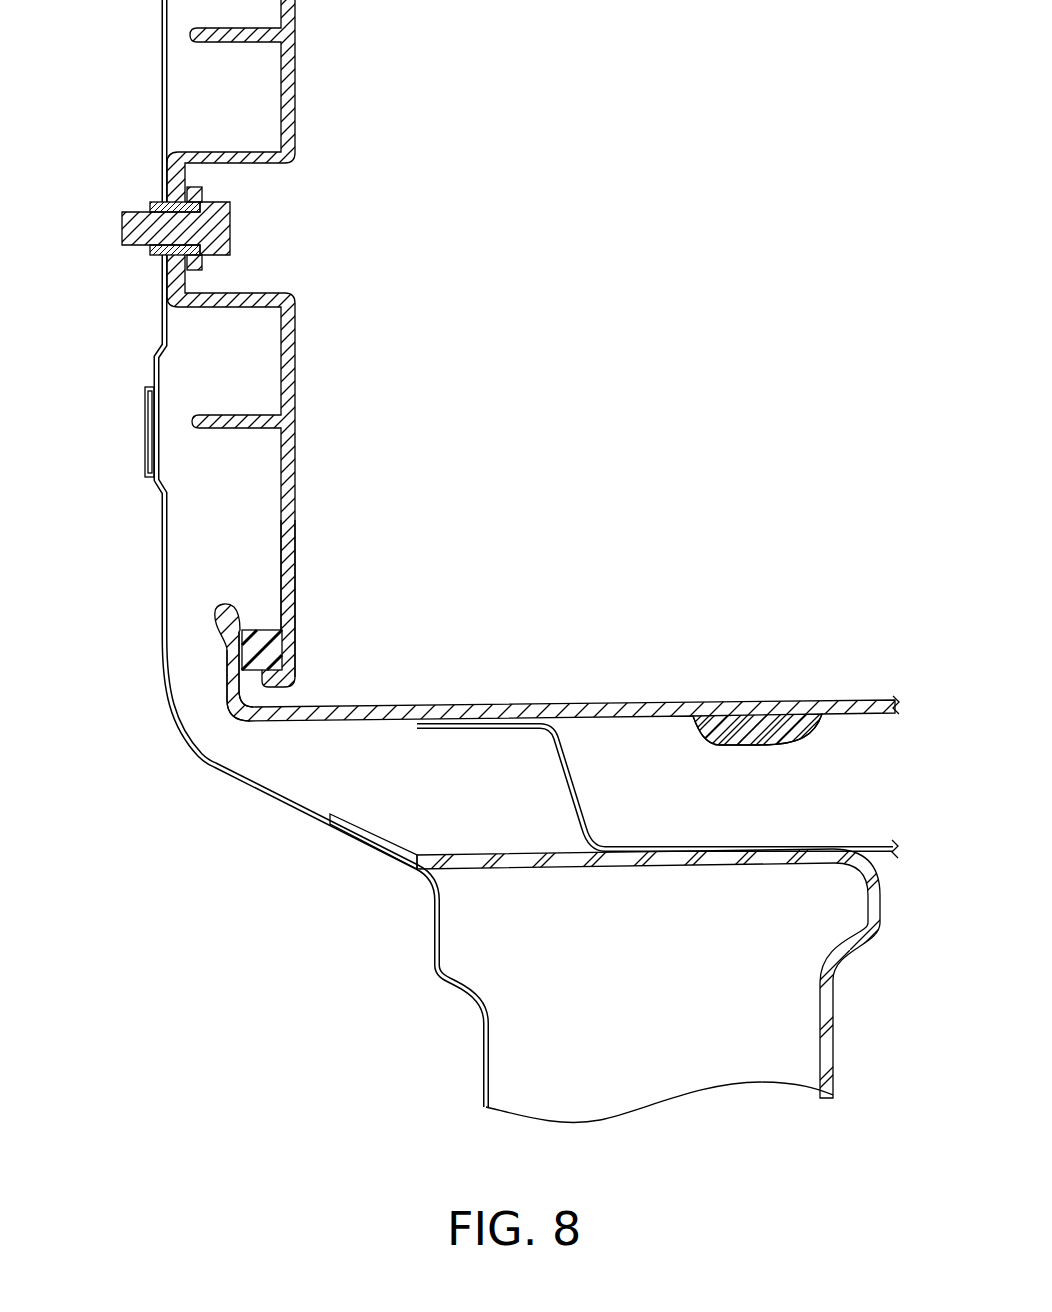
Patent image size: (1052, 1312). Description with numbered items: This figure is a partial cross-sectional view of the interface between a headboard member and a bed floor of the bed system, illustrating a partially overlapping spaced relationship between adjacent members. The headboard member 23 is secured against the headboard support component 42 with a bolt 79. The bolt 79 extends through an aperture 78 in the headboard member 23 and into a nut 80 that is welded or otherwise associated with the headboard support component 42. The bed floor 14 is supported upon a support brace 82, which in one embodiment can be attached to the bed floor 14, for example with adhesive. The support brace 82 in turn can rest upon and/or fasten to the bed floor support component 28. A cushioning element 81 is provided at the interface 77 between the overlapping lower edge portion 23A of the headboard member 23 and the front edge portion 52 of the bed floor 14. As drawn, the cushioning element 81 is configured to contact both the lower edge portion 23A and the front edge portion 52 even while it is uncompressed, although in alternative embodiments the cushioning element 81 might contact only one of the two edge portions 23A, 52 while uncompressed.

The bed floor 14 is at (640, 687).
The headboard member 23 is at (327, 312).
The lower edge portion 23A is at (317, 598).
The bed floor support component 28 is at (403, 900).
The headboard support component 42 is at (147, 100).
The front edge portion 52 is at (217, 658).
The interface 77 is at (283, 695).
The aperture 78 is at (157, 262).
The bolt 79 is at (233, 226).
The nut 80 is at (152, 205).
The cushioning element 81 is at (260, 628).
The support brace 82 is at (540, 798).